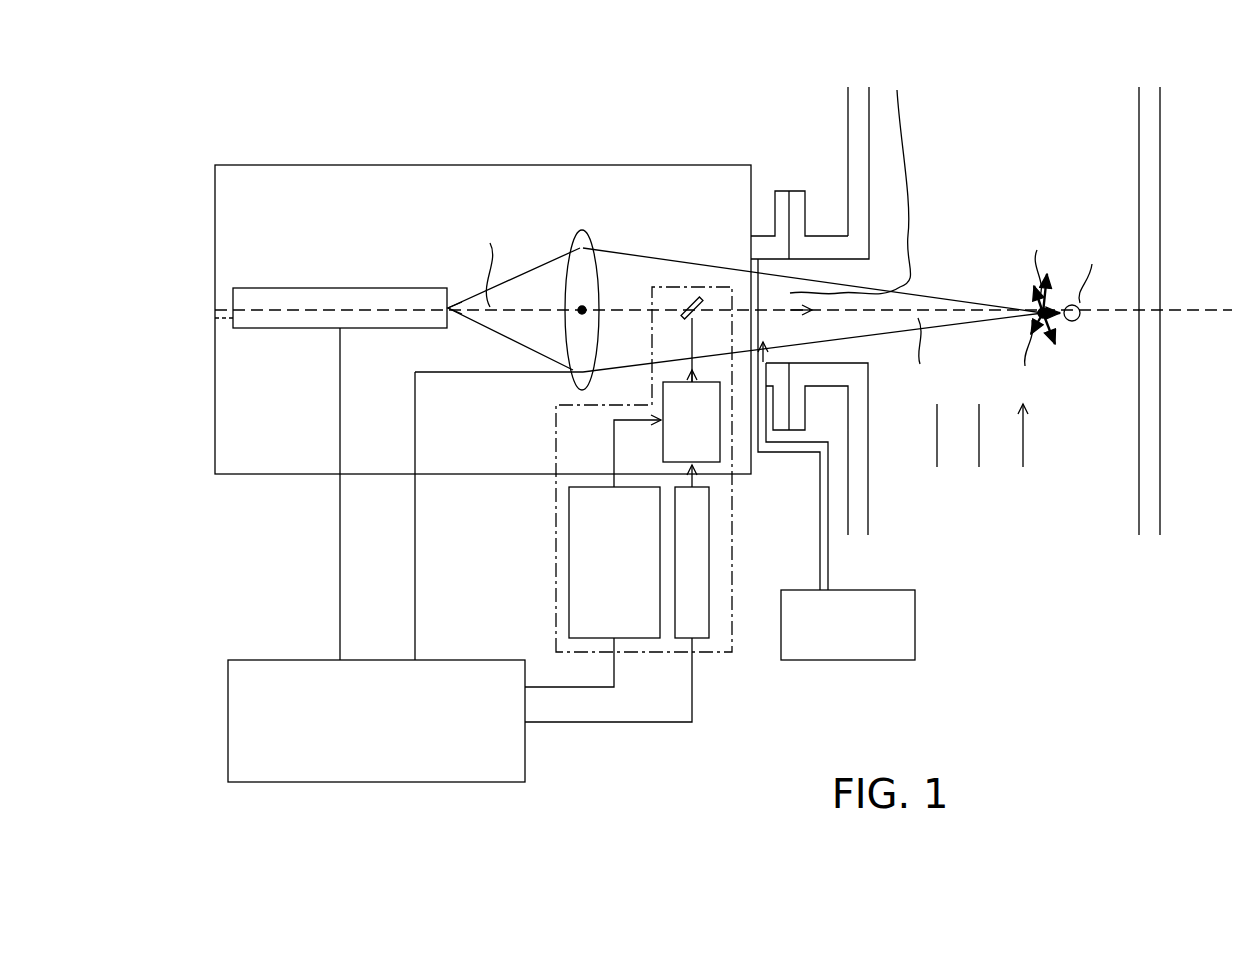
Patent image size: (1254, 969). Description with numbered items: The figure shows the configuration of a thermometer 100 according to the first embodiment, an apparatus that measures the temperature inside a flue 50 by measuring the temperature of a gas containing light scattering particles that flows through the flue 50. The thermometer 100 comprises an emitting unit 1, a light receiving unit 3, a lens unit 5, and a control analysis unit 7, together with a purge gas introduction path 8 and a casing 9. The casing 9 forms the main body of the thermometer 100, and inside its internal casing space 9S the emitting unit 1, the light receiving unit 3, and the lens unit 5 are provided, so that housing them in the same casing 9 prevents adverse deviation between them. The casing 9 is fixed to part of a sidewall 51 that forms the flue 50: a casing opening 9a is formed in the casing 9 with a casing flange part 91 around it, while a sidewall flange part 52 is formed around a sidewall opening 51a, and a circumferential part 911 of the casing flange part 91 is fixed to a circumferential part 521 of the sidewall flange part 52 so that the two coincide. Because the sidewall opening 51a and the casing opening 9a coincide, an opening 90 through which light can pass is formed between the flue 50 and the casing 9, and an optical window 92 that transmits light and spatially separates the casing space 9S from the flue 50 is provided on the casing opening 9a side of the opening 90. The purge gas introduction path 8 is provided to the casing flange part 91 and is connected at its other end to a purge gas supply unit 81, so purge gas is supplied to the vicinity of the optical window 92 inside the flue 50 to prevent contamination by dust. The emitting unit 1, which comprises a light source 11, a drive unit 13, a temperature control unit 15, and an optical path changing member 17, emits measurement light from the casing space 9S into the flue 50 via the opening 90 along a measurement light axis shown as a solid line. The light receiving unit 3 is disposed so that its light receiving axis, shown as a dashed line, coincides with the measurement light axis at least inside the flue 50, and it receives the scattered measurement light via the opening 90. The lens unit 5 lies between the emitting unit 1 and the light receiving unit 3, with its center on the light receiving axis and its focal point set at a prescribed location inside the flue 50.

The thermometer 100 is at (206, 146).
The casing 9 is at (437, 165).
The casing space 9S is at (271, 210).
The light receiving unit 3 is at (215, 318).
The lens unit 5 is at (580, 230).
The optical window 92 is at (872, 282).
The control analysis unit 7 is at (252, 660).
The emitting unit 1 is at (646, 469).
The temperature control unit 15 is at (569, 563).
The drive unit 13 is at (709, 563).
The light source 11 is at (720, 420).
The optical path changing member 17 is at (688, 298).
The opening 90 is at (969, 276).
The casing opening 9a is at (770, 274).
The sidewall 51 is at (850, 93).
The sidewall flange part 52 is at (792, 182).
The circumferential part of the sidewall flange part 521 is at (798, 213).
The casing flange part 91 is at (753, 182).
The circumferential part of the casing flange part 911 is at (756, 158).
The sidewall opening 51a is at (856, 177).
The purge gas introduction path 8 is at (829, 567).
The purge gas supply unit 81 is at (916, 603).
The flue 50 is at (1001, 151).